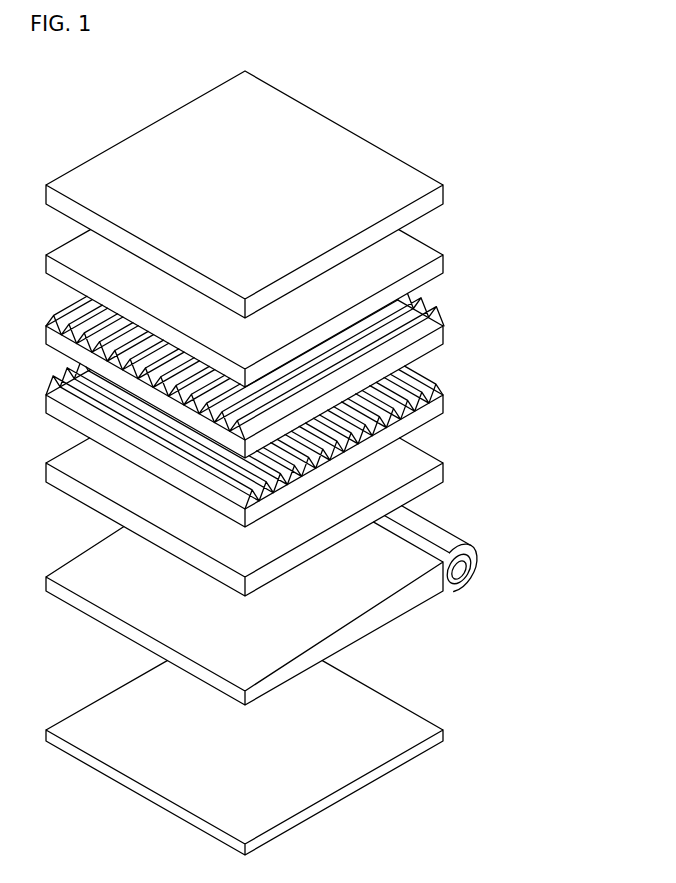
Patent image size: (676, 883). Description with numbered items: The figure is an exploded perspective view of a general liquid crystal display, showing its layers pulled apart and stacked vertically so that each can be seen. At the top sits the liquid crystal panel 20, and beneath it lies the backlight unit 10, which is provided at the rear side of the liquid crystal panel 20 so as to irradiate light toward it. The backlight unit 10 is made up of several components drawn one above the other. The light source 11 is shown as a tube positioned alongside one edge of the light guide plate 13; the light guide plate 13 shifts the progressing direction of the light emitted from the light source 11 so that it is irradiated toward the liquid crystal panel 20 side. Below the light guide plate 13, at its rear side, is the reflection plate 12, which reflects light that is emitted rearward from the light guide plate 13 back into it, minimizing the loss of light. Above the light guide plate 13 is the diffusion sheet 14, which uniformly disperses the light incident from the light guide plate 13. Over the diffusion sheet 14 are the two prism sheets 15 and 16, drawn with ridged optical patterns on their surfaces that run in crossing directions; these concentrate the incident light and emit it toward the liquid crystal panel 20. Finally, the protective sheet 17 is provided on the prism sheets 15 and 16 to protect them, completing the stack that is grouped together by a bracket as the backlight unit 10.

The backlight unit 10 is at (541, 745).
The light source 11 is at (463, 572).
The reflection plate 12 is at (445, 735).
The light guide plate 13 is at (412, 602).
The diffusion sheet 14 is at (445, 469).
The prism sheet 15 is at (445, 399).
The prism sheet 16 is at (445, 330).
The protective sheet 17 is at (445, 261).
The liquid crystal panel 20 is at (445, 190).